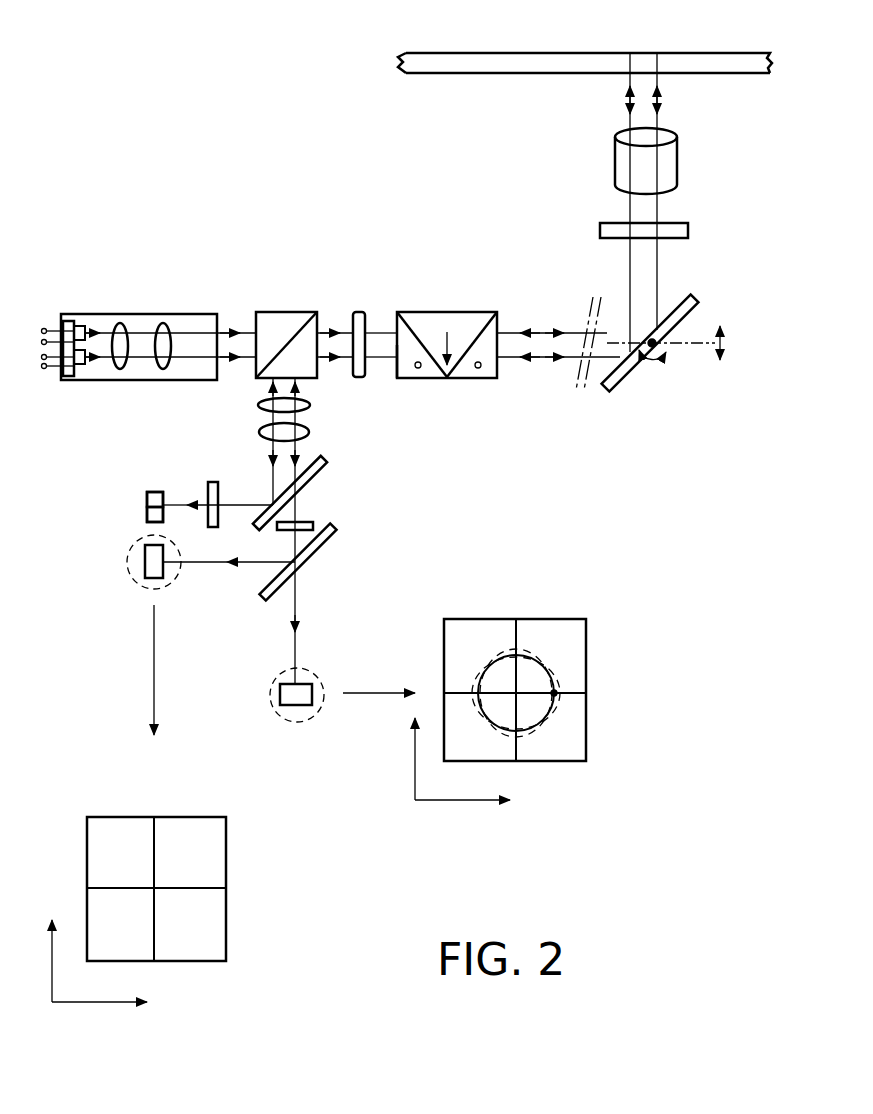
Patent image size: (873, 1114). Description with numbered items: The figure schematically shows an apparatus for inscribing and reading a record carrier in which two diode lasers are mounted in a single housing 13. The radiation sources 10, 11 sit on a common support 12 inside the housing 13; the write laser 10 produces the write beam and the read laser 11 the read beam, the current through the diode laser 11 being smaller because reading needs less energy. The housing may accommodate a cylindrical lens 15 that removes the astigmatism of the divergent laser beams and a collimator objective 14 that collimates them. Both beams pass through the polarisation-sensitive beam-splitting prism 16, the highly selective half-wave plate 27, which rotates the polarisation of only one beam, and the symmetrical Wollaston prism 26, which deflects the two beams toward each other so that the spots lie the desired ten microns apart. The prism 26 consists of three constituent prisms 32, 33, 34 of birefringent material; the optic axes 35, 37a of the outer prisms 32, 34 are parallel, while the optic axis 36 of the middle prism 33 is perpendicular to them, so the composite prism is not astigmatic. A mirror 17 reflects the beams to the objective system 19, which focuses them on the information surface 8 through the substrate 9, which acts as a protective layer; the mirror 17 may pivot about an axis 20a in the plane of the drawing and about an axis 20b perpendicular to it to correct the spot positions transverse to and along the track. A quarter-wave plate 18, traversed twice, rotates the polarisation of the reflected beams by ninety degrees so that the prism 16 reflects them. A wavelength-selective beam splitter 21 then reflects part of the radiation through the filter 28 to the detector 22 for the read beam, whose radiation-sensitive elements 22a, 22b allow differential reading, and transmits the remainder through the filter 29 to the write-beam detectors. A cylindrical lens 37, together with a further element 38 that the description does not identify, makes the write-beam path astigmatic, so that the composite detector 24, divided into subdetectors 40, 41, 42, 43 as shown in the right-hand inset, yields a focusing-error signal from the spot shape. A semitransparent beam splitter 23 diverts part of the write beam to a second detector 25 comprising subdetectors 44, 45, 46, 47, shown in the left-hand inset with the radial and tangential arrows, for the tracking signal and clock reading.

The information surface 8 is at (722, 53).
The substrate 9 is at (731, 64).
The radiation source (write diode laser) 10 is at (78, 313).
The radiation source (read diode laser) 11 is at (92, 384).
The common support 12 is at (70, 380).
The housing 13 is at (122, 314).
The collimator objective 14 is at (121, 370).
The cylindrical lens 15 is at (163, 370).
The polarisation-sensitive beam-splitting prism 16 is at (302, 312).
The mirror 17 is at (700, 306).
The quarter-wave plate 18 is at (678, 235).
The objective system 19 is at (668, 164).
The pivot axis 20a is at (690, 350).
The pivot axis 20b is at (655, 360).
The beam splitter 21 is at (316, 474).
The detector 22 is at (104, 518).
The radiation-sensitive element 22a is at (160, 495).
The radiation-sensitive element 22b is at (160, 522).
The beam splitter 23 is at (318, 548).
The composite detector 24 is at (292, 696).
The second detector 25 is at (150, 574).
The polarisation-sensitive prism (Wollaston prism) 26 is at (437, 405).
The highly selective half-wave plate 27 is at (359, 318).
The wavelength-selective filter 28 is at (218, 494).
The wavelength-selective filter 29 is at (313, 525).
The constituent prism 32 is at (397, 367).
The constituent prism 33 is at (422, 322).
The constituent prism 34 is at (500, 367).
The optic axis 35 is at (418, 368).
The optic axis 36 is at (447, 330).
The cylindrical lens 37 is at (310, 405).
The optic axis 37a is at (479, 368).
The lens 38 is at (309, 432).
The subdetector 40 is at (576, 635).
The subdetector 41 is at (455, 633).
The subdetector 42 is at (454, 752).
The subdetector 43 is at (578, 752).
The subdetector 44 is at (216, 838).
The subdetector 45 is at (97, 838).
The subdetector 46 is at (97, 948).
The subdetector 47 is at (216, 948).